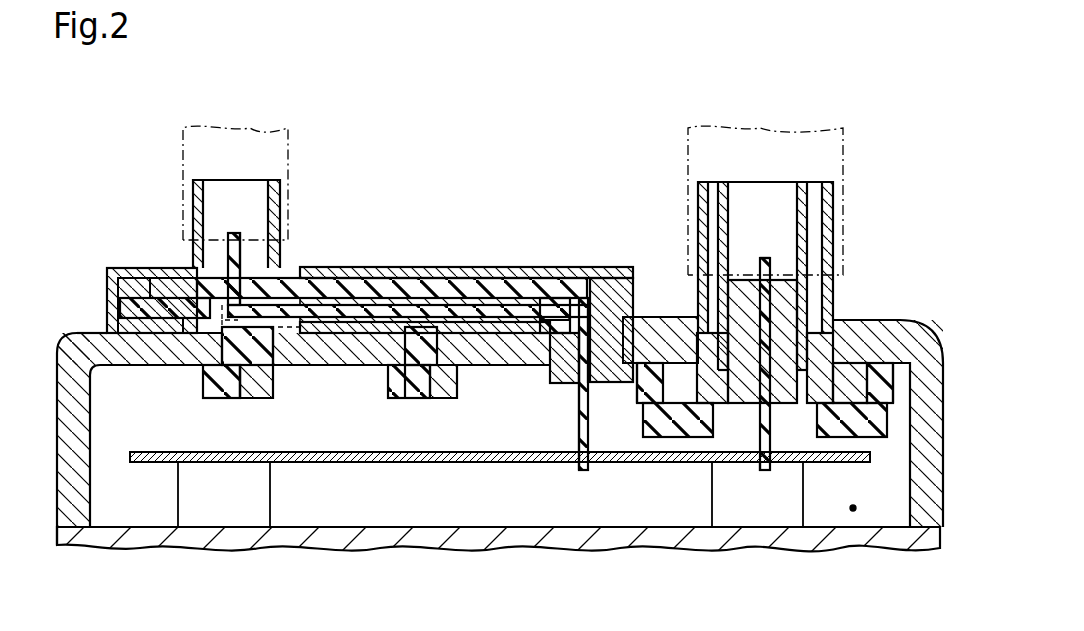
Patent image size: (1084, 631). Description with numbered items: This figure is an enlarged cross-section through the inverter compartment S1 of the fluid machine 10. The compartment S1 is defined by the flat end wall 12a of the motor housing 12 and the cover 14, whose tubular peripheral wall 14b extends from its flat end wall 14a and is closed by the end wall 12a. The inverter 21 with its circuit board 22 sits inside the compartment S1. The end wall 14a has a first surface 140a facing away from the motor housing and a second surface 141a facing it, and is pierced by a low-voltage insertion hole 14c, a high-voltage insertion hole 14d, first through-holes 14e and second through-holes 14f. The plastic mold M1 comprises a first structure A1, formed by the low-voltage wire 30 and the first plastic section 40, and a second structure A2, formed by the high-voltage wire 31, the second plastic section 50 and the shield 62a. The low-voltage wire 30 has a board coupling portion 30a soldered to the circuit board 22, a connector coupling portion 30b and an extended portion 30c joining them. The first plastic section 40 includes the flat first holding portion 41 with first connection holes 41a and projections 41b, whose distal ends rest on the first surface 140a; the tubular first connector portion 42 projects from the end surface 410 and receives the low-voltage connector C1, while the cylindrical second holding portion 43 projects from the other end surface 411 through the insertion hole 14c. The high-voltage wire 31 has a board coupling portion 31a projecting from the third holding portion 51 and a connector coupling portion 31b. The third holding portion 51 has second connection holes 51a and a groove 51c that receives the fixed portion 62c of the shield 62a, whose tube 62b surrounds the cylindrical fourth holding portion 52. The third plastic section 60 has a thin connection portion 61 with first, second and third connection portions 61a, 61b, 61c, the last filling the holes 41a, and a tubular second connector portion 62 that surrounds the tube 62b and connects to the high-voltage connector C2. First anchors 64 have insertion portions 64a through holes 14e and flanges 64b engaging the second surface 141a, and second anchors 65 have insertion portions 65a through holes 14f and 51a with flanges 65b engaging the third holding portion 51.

The fluid machine 10 is at (849, 91).
The motor housing 12 is at (400, 545).
The end wall 12a is at (300, 543).
The cover 14 is at (92, 492).
The end wall 14a is at (90, 333).
The peripheral wall 14b is at (85, 512).
The low-voltage insertion hole 14c is at (572, 295).
The high-voltage insertion hole 14d is at (812, 320).
The first through-hole 14e is at (215, 385).
The second through-hole 14f is at (655, 317).
The inverter 21 is at (135, 448).
The circuit board 22 is at (352, 464).
The low-voltage wire 30 is at (582, 470).
The low-voltage board coupling portion 30a is at (579, 422).
The low-voltage connector coupling portion 30b is at (240, 292).
The low-voltage extended portion 30c is at (530, 305).
The high-voltage wire 31 is at (768, 470).
The high-voltage board coupling portion 31a is at (763, 472).
The high-voltage connector coupling portion 31b is at (763, 300).
The first plastic section 40 is at (138, 275).
The first holding portion 41 is at (410, 276).
The first connection hole 41a is at (432, 276).
The projection 41b is at (320, 283).
The end surface 410 is at (153, 272).
The end surface 411 is at (480, 364).
The first connector portion 42 is at (280, 192).
The second holding portion 43 is at (592, 386).
The second plastic section 50 is at (640, 317).
The third holding portion 51 is at (866, 437).
The second connection hole 51a is at (672, 407).
The groove 51c is at (705, 347).
The fourth holding portion 52 is at (795, 278).
The third plastic section 60 is at (376, 267).
The connection portion 61 is at (598, 267).
The first connection portion 61a is at (500, 268).
The second connection portion 61b is at (548, 343).
The third connection portion 61c is at (396, 290).
The second connector portion 62 is at (832, 202).
The shield 62a is at (724, 188).
The tube 62b is at (807, 187).
The fixed portion 62c is at (755, 425).
The first anchor 64 is at (260, 390).
The first insertion portion 64a is at (265, 370).
The first flange 64b is at (200, 382).
The second anchor 65 is at (725, 437).
The second insertion portion 65a is at (700, 440).
The second flange 65b is at (640, 420).
The first surface 140a is at (465, 318).
The second surface 141a is at (165, 335).
The first structure A1 is at (98, 235).
The second structure A2 is at (898, 223).
The low-voltage connector C1 is at (240, 128).
The high-voltage connector C2 is at (777, 128).
The plastic mold M1 is at (112, 154).
The inverter compartment S1 is at (853, 511).